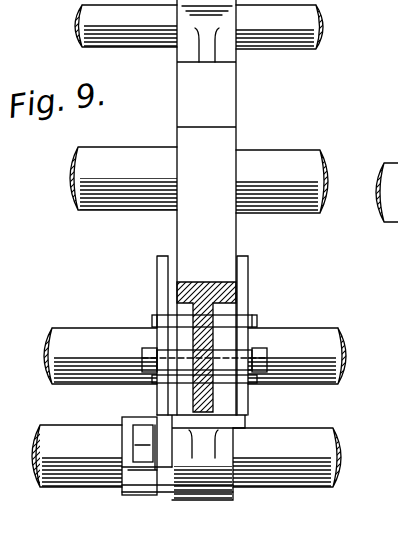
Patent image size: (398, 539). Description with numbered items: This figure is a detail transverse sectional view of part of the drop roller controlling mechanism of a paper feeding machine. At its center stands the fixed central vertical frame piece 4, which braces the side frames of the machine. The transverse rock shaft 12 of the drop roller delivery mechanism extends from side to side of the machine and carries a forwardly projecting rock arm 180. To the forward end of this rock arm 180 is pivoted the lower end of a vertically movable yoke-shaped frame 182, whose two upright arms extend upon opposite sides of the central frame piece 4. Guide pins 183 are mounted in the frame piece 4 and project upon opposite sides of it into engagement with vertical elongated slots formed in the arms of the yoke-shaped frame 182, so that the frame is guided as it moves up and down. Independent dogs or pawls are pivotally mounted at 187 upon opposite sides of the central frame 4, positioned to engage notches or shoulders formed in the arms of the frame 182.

The central vertical frame piece 4 is at (218, 106).
The rock shaft 12 is at (397, 228).
The rock arm 180 is at (148, 462).
The yoke-shaped frame 182 is at (243, 416).
The guide pins 183 is at (180, 320).
The pawl pivot 187 is at (277, 367).